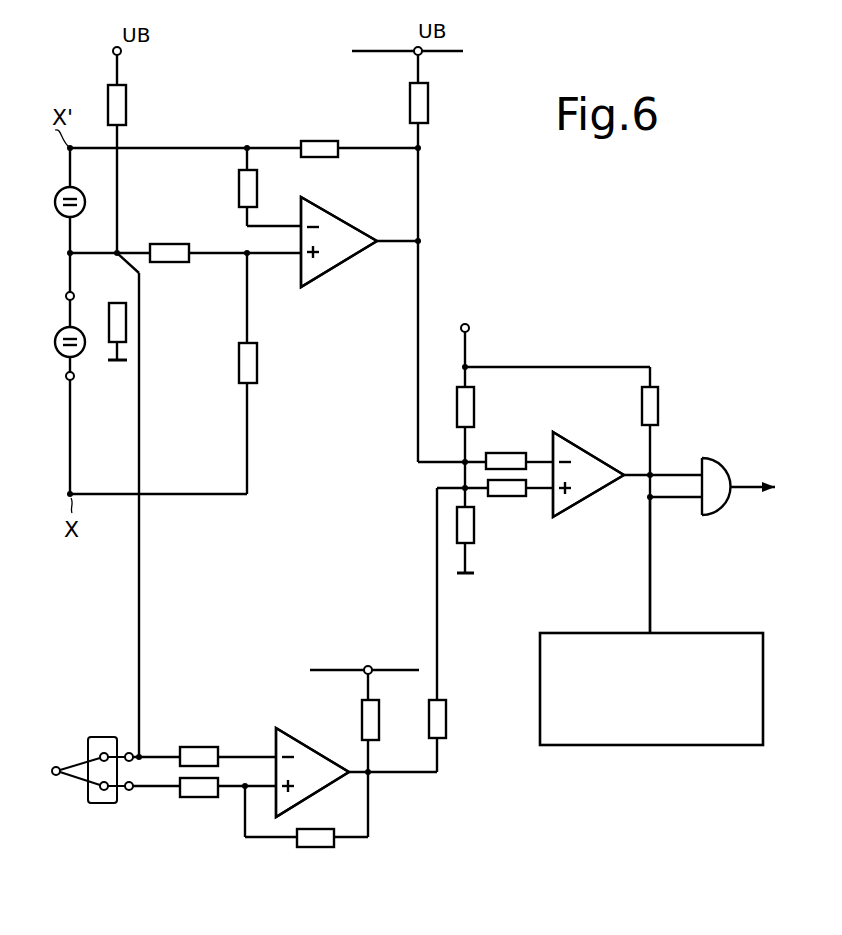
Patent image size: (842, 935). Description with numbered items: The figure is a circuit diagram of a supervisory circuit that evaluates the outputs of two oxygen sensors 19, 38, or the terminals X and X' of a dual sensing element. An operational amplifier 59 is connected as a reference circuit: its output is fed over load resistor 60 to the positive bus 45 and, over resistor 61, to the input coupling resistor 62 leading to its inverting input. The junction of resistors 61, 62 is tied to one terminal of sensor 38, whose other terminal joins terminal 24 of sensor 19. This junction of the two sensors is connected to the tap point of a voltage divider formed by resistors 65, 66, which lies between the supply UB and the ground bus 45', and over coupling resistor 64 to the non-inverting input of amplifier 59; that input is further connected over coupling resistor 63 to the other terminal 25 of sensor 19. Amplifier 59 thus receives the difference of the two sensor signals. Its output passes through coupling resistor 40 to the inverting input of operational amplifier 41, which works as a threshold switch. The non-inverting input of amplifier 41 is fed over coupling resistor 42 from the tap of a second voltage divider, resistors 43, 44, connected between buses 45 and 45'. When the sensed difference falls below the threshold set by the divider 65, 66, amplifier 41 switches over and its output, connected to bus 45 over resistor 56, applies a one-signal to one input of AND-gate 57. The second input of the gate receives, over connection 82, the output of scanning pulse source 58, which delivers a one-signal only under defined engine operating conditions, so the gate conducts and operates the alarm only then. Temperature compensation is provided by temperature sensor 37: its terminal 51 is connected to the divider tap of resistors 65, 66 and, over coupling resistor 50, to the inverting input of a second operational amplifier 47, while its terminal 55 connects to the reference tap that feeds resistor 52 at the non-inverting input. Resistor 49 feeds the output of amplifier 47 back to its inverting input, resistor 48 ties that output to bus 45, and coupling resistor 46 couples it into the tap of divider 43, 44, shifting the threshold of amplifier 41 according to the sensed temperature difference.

The resistor 65 is at (127, 105).
The sensor 38 is at (82, 194).
The terminal 24 is at (74, 294).
The oxygen sensor 19 is at (81, 350).
The terminal 25 is at (73, 381).
The coupling resistor 64 is at (167, 264).
The resistor 66 is at (126, 323).
The supply bus 45' is at (309, 483).
The input coupling resistor 62 is at (257, 188).
The resistor 61 is at (310, 140).
The load resistor 60 is at (429, 105).
The positive bus 45 is at (429, 343).
The operational amplifier 59 is at (325, 258).
The coupling resistor 63 is at (258, 368).
The resistor 43 is at (475, 407).
The input coupling resistor 40 is at (507, 452).
The operational amplifier 41 is at (570, 445).
The resistor 56 is at (659, 402).
The resistor 44 is at (475, 527).
The coupling resistor 42 is at (515, 490).
The connecting line 82 is at (648, 500).
The AND-gate 57 is at (717, 503).
The scanning pulse source 58 is at (703, 637).
The temperature sensor 37 is at (88, 754).
The terminal 51 is at (127, 750).
The terminal 55 is at (128, 793).
The coupling resistor 50 is at (197, 747).
The resistor 52 is at (198, 797).
The operational amplifier 47 is at (303, 750).
The resistor 48 is at (379, 720).
The coupling resistor 46 is at (447, 722).
The resistor 49 is at (316, 848).